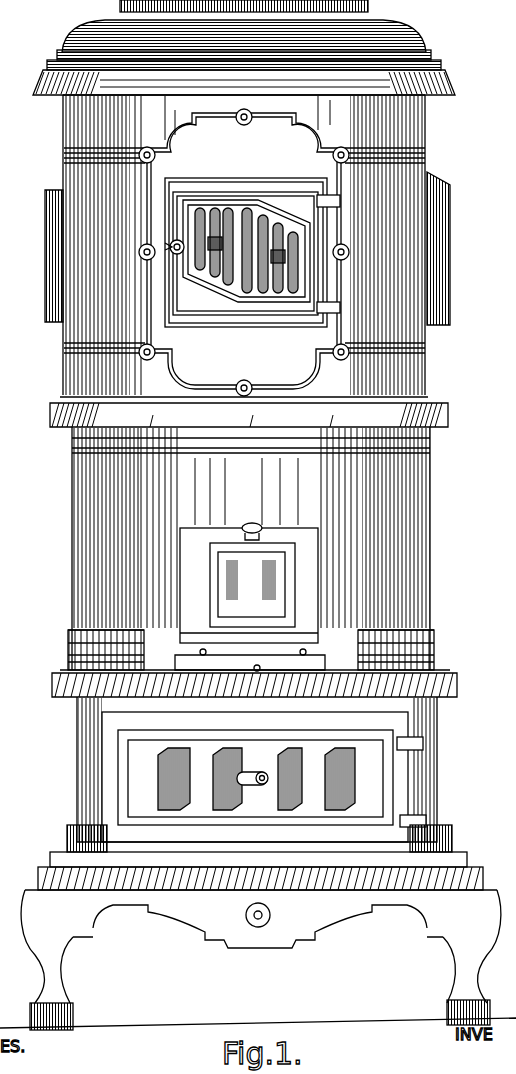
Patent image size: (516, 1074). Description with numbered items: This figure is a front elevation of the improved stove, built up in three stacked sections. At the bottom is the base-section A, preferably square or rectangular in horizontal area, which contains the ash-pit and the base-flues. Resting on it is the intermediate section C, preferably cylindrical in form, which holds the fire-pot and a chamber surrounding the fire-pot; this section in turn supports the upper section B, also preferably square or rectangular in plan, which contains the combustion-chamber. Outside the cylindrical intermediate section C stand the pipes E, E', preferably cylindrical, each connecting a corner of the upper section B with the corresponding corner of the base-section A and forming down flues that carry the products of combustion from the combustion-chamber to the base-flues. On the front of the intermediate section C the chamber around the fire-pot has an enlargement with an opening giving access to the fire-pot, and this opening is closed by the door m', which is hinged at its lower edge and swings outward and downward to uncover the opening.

The base-section A is at (437, 754).
The upper section B is at (363, 251).
The intermediate section C is at (251, 549).
The pipe E is at (106, 549).
The pipe E' is at (396, 549).
The door m' is at (250, 597).